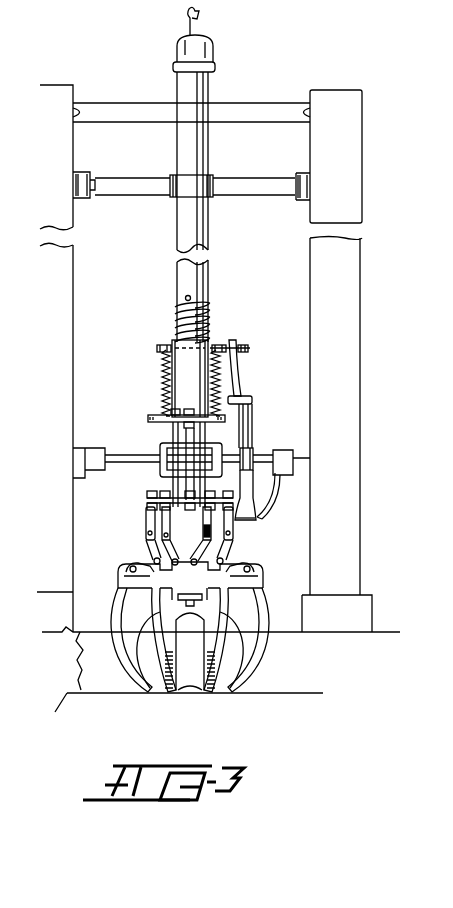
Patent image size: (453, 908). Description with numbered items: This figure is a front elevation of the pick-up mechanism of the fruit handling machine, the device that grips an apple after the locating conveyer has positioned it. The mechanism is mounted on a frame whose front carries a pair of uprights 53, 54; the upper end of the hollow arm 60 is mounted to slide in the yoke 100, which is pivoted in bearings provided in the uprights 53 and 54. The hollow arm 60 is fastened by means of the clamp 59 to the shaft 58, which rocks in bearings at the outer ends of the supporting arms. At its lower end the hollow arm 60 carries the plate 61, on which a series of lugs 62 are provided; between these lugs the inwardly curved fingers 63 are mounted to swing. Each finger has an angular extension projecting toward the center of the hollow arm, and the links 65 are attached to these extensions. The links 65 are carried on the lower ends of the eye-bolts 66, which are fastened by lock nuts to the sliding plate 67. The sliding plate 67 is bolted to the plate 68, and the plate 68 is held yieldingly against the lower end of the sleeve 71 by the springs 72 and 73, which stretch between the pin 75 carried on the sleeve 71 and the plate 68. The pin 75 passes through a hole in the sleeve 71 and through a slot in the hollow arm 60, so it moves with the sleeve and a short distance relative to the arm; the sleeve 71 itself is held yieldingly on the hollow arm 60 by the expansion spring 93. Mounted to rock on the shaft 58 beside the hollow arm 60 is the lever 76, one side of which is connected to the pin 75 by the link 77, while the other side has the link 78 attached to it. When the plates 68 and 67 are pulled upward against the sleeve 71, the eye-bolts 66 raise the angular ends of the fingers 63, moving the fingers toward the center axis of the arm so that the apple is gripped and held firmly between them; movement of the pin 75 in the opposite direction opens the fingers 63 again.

The upright 53 is at (62, 409).
The upright 54 is at (343, 365).
The shaft 58 is at (118, 457).
The clamp 59 is at (160, 466).
The hollow arm 60 is at (190, 228).
The plate 61 is at (140, 577).
The lugs 62 is at (130, 565).
The inwardly curved fingers 63 is at (250, 637).
The links 65 is at (229, 548).
The eye-bolts 66 is at (147, 515).
The sliding plate 67 is at (147, 498).
The plate 68 is at (152, 418).
The sleeve 71 is at (187, 392).
The spring 72 is at (162, 365).
The spring 73 is at (222, 377).
The pin 75 is at (228, 346).
The lever 76 is at (250, 452).
The link 77 is at (237, 390).
The link 78 is at (272, 503).
The expansion spring 93 is at (177, 312).
The yoke 100 is at (192, 183).